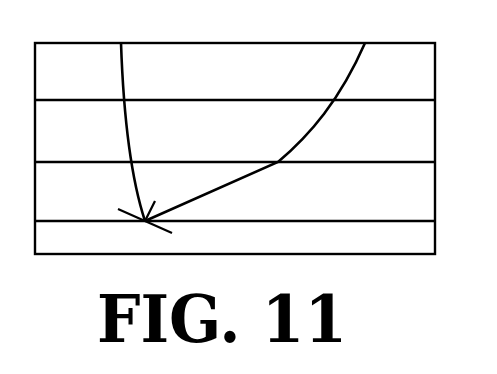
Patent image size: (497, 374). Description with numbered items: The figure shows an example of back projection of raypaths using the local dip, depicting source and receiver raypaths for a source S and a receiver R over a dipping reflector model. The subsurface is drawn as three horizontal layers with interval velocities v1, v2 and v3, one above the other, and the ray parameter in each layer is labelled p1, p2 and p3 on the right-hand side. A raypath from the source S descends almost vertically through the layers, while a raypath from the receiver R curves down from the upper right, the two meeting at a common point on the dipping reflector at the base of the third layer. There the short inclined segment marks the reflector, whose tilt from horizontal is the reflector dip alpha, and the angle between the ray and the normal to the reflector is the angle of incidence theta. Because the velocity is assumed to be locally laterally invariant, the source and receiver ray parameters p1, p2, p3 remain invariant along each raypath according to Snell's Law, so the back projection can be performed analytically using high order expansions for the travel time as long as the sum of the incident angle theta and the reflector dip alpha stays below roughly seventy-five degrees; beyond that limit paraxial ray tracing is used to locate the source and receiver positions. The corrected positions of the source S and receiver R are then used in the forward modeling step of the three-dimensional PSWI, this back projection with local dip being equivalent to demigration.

The source S is at (129, 117).
The receiver R is at (260, 117).
The velocity of first layer v1 is at (235, 88).
The velocity of second layer v2 is at (235, 149).
The velocity of third layer v3 is at (235, 208).
The ray parameter in first layer p1 is at (379, 88).
The ray parameter in second layer p2 is at (375, 147).
The ray parameter in third layer p3 is at (375, 206).
The angle of incidence theta is at (153, 209).
The reflector dip alpha is at (145, 221).